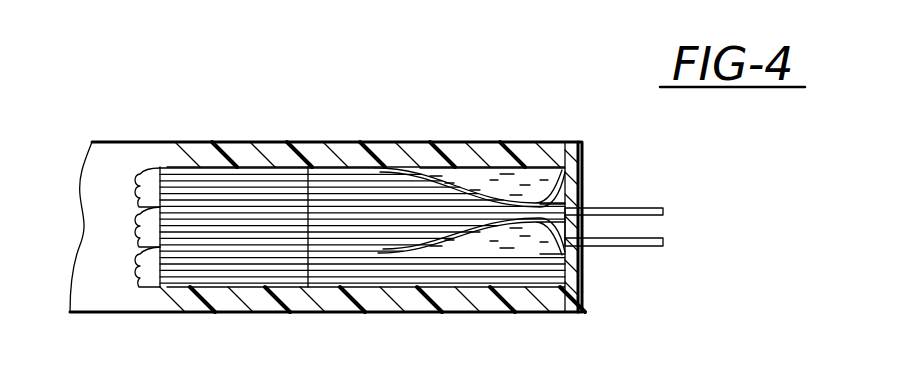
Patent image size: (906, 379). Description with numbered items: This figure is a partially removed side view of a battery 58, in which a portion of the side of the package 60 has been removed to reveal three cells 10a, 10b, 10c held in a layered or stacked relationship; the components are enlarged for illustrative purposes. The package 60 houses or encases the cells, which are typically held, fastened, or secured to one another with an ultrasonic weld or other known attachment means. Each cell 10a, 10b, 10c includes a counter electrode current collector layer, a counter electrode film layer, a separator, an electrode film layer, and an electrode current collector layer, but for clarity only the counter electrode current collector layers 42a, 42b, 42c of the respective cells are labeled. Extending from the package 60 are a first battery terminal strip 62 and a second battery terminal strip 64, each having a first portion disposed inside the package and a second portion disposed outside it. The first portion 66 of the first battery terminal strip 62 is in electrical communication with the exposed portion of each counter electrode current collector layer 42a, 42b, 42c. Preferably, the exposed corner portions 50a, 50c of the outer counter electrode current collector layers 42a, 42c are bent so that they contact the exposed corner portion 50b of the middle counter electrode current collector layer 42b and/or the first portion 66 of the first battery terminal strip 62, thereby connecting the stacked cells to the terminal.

The cell 10a is at (138, 188).
The cell 10b is at (138, 228).
The cell 10c is at (138, 264).
The counter electrode current collector layer 42a is at (287, 167).
The counter electrode current collector layer 42b is at (358, 210).
The counter electrode current collector layer 42c is at (378, 252).
The exposed corner portion 50a is at (480, 185).
The exposed corner portion 50b is at (560, 208).
The exposed corner portion 50c is at (520, 240).
The battery 58 is at (573, 127).
The package 60 is at (215, 142).
The first battery terminal strip 62 is at (667, 210).
The second battery terminal strip 64 is at (667, 243).
The first portion 66 is at (572, 222).